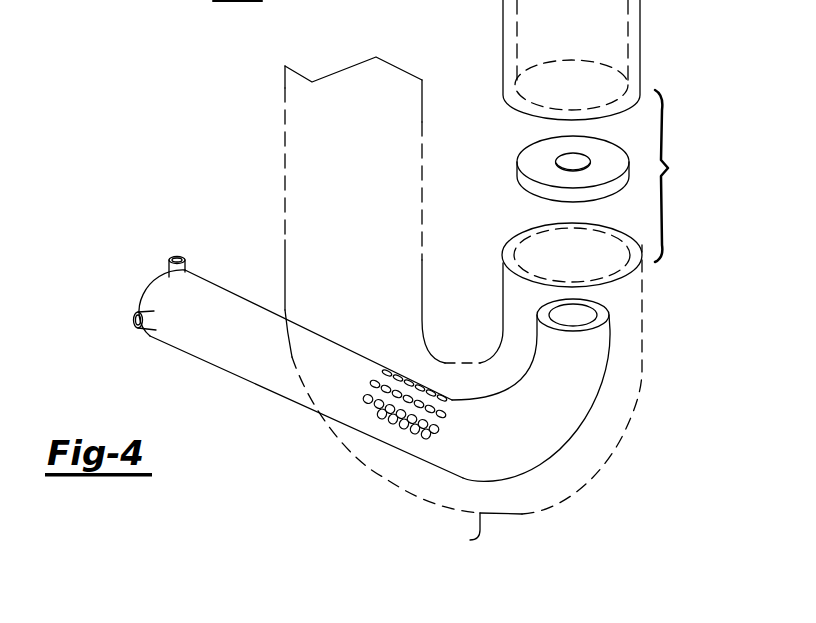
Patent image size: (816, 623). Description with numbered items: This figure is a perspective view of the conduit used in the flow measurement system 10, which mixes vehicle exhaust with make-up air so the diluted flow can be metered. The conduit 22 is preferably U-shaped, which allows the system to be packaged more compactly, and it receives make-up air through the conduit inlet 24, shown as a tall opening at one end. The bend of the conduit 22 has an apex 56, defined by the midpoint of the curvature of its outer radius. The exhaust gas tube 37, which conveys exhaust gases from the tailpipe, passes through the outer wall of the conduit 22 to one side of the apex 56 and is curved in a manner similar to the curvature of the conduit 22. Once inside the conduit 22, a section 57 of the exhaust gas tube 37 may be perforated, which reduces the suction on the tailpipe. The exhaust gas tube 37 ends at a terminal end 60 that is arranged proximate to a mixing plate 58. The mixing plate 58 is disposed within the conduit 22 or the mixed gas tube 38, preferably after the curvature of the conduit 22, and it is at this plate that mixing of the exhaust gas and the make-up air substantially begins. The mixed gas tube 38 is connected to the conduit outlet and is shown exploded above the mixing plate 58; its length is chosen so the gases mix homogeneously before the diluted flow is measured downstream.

The flow measurement system 10 is at (100, 279).
The conduit 22 is at (623, 435).
The conduit inlet 24 is at (285, 192).
The exhaust gas tube 37 is at (201, 363).
The mixed gas tube 38 is at (503, 53).
The apex 56 is at (470, 540).
The perforated section 57 is at (375, 384).
The mixing plate 58 is at (532, 152).
The terminal end 60 is at (610, 307).